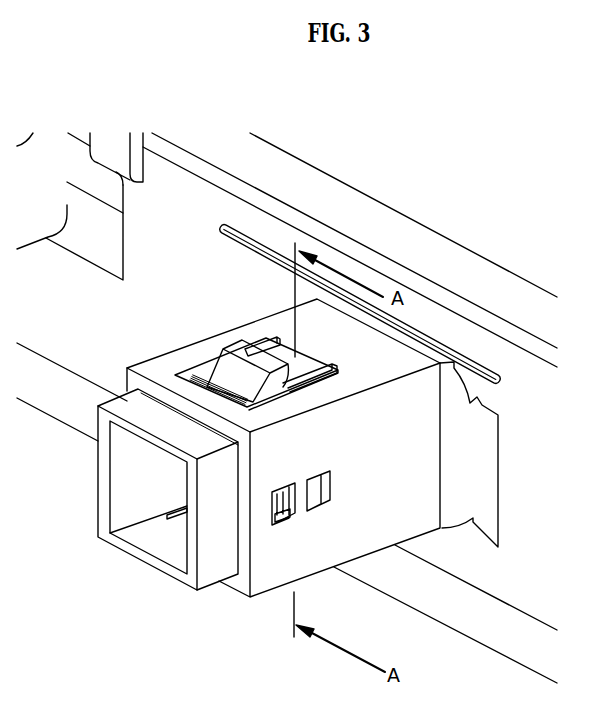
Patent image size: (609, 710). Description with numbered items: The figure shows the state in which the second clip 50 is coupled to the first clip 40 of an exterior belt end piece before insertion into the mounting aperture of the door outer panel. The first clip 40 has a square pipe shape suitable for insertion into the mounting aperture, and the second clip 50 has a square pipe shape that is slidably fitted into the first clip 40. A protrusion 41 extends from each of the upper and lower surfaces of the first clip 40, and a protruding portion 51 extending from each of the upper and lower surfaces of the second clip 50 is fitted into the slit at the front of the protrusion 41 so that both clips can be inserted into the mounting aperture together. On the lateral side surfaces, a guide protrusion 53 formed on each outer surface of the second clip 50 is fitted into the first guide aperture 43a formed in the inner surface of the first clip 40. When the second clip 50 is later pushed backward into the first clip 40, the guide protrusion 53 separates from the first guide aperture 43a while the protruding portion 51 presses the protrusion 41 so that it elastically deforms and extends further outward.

The first clip 40 is at (388, 523).
The protrusion 41 is at (238, 364).
The first guide aperture 43a is at (292, 521).
The second clip 50 is at (187, 578).
The protruding portion 51 is at (202, 383).
The guide protrusion 53 is at (278, 518).